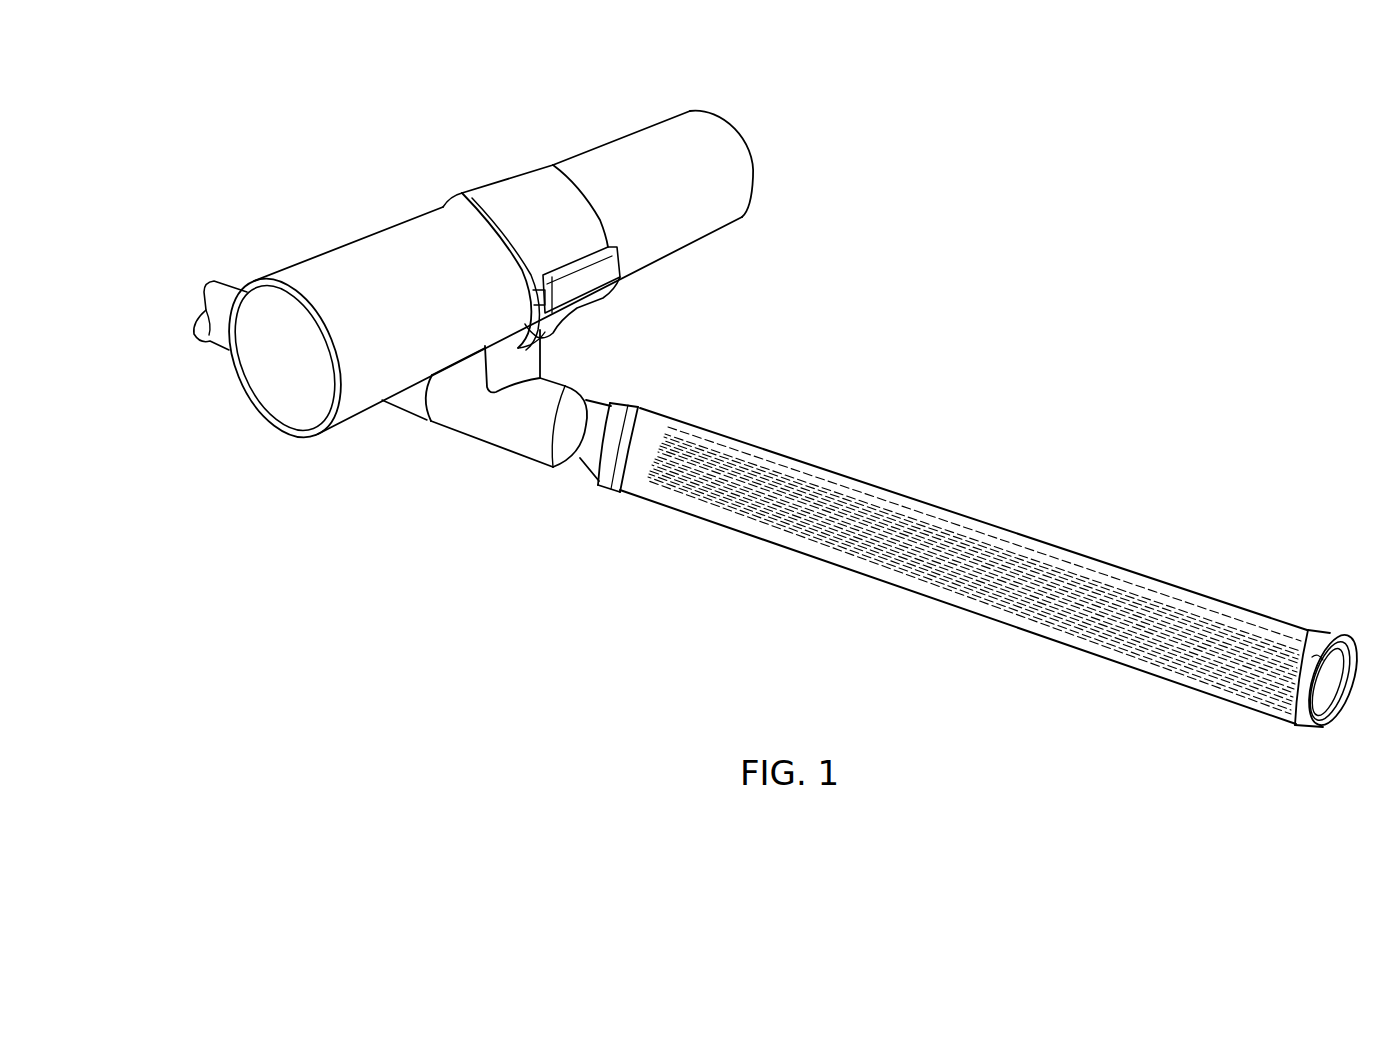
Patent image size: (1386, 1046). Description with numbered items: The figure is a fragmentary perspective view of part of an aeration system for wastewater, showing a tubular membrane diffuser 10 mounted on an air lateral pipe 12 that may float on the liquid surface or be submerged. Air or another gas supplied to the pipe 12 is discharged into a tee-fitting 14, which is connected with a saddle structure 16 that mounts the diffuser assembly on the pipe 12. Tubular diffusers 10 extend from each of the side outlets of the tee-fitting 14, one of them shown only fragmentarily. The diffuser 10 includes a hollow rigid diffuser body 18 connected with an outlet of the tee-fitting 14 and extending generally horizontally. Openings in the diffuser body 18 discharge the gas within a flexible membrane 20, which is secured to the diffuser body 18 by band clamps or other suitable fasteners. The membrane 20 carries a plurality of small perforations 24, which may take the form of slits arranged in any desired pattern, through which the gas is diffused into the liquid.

The tubular membrane diffuser 10 is at (1167, 467).
The air lateral pipe 12 is at (717, 170).
The tee-fitting 14 is at (447, 423).
The saddle structure 16 is at (542, 182).
The diffuser body 18 is at (583, 457).
The flexible membrane 20 is at (993, 581).
The perforations 24 is at (758, 503).